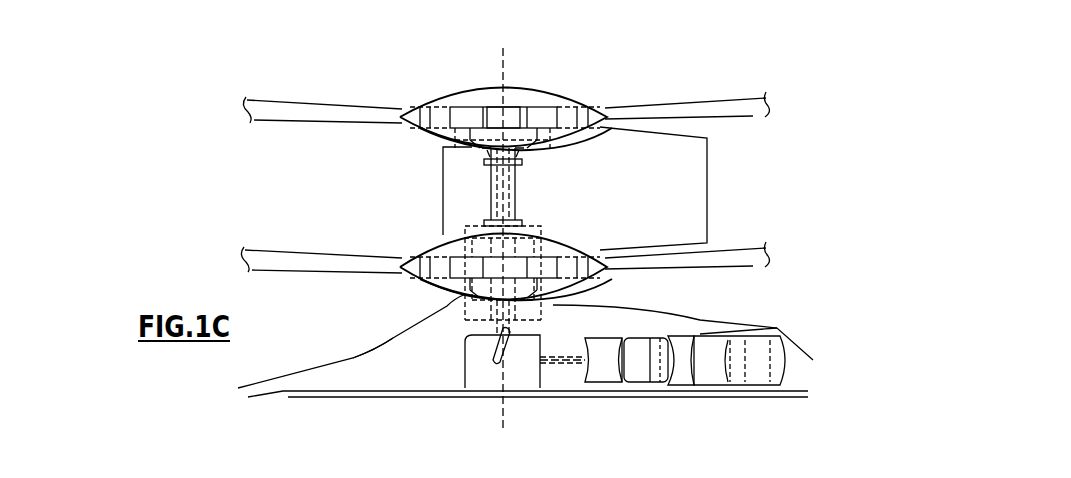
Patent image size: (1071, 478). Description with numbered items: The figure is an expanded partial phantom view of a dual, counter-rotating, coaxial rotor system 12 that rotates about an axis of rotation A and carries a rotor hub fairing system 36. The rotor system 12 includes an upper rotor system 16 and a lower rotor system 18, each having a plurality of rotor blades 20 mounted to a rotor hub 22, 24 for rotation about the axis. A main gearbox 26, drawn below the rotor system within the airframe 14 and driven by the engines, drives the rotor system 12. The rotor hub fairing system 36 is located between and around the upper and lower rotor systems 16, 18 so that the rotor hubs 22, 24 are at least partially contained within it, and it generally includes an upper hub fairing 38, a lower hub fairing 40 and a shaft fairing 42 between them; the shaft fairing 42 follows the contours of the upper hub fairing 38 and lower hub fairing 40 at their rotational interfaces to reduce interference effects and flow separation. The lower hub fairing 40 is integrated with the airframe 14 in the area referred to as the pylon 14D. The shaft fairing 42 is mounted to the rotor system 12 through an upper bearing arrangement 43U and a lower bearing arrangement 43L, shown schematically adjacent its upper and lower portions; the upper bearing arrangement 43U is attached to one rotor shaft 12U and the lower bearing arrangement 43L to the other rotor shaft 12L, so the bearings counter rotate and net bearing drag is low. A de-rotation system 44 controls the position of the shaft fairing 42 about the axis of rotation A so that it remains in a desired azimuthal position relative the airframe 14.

The axis of rotation A is at (512, 72).
The rotor hub fairing system 36 is at (600, 66).
The upper rotor system 16 is at (505, 173).
The upper hub fairing 38 is at (452, 84).
The rotor hub 22 is at (516, 119).
The rotor blades 20 is at (710, 117).
The upper bearing arrangement 43U is at (524, 162).
The rotor shaft 12U is at (510, 188).
The lower bearing arrangement 43L is at (524, 224).
The shaft fairing 42 is at (708, 193).
The de-rotation system 44 is at (465, 228).
The lower rotor system 18 is at (503, 263).
The lower hub fairing 40 is at (404, 246).
The counter-rotating coaxial rotor system 12 is at (402, 288).
The rotor shaft 12L is at (470, 323).
The airframe 14 is at (305, 402).
The pylon 14D is at (386, 340).
The main gearbox 26 is at (502, 361).
The rotor hub 24 is at (513, 278).